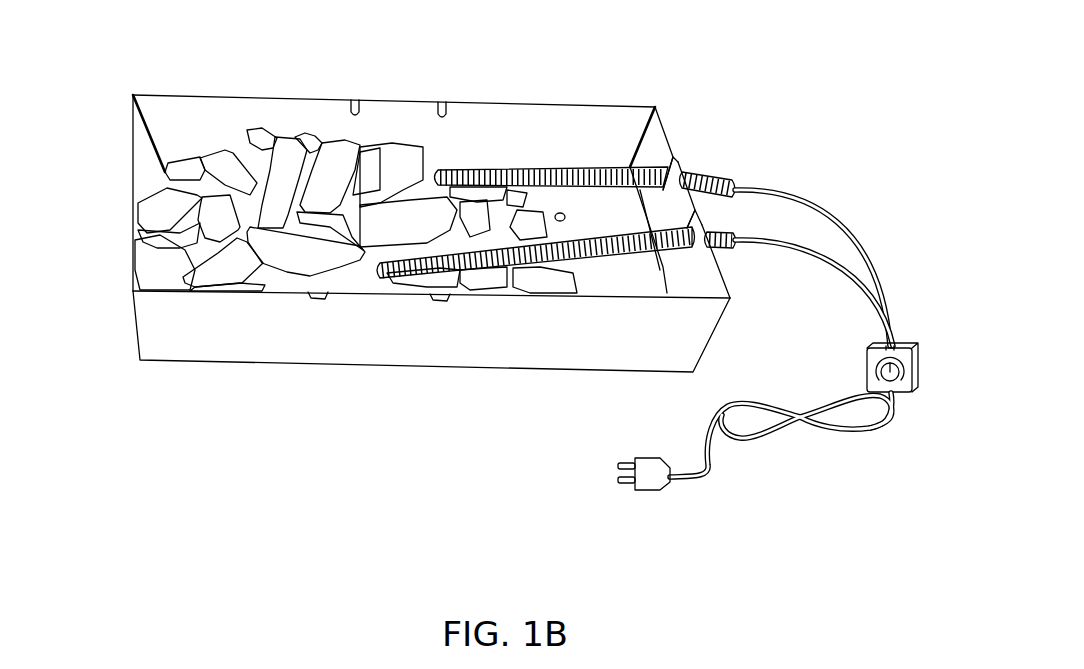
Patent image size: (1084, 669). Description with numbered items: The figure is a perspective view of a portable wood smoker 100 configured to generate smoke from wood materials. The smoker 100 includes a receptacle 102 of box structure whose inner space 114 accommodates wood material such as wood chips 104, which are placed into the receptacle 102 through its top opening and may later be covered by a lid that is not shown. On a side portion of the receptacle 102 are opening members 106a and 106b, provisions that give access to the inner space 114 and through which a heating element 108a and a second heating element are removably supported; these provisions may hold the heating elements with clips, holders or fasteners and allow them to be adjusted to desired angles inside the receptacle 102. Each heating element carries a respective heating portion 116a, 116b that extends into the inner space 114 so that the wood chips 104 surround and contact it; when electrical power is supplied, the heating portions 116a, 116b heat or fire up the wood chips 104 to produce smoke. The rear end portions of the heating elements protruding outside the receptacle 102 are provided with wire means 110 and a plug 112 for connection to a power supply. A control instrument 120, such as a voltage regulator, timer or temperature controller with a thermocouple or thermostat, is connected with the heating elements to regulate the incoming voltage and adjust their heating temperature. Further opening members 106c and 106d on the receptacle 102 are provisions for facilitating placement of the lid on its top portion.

The portable wood smoker 100 is at (140, 507).
The receptacle 102 is at (208, 343).
The wood chips 104 is at (147, 258).
The opening member 106a is at (700, 218).
The opening member 106b is at (672, 155).
The opening member 106c is at (442, 100).
The opening member 106d is at (440, 297).
The heating element 108a is at (837, 212).
The wire means 110 is at (800, 425).
The plug 112 is at (655, 483).
The inner space 114 is at (650, 288).
The heating portion 116a is at (728, 240).
The heating portion 116b is at (722, 180).
The control instrument 120 is at (902, 345).